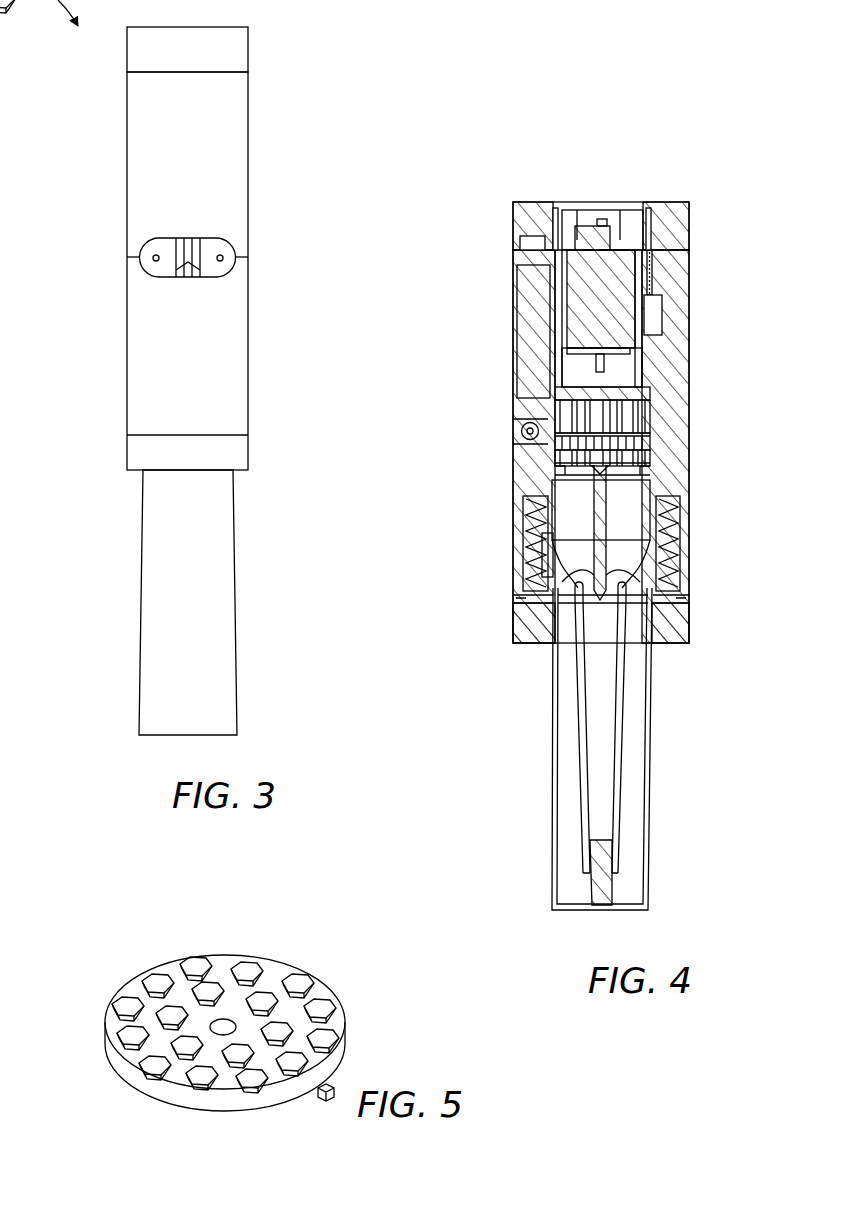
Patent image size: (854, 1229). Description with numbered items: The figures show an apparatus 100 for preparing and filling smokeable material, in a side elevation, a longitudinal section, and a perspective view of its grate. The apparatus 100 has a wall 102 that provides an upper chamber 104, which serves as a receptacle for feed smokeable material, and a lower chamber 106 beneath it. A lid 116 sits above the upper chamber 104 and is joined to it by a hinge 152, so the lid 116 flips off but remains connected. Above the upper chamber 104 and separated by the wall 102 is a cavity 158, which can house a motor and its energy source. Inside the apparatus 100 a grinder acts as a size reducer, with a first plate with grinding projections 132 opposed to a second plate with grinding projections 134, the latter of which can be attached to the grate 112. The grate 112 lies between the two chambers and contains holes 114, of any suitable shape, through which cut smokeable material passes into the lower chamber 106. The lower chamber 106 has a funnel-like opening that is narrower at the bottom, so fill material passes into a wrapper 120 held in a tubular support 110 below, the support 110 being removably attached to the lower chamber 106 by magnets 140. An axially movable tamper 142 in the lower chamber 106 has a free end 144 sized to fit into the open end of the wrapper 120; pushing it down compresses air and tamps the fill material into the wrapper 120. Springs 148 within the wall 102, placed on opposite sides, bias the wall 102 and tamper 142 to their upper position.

In FIG. 4, the apparatus 100 is at (692, 138).
In FIG. 4, the wall 102 is at (688, 445).
In FIG. 4, the upper chamber 104 is at (556, 390).
In FIG. 4, the lower chamber 106 is at (553, 556).
In FIG. 3, the support 110 is at (140, 597).
In FIG. 4, the support 110 is at (553, 748).
In FIG. 4, the grate 112 is at (620, 463).
In FIG. 5, the grate 112 is at (135, 988).
In FIG. 5, the holes 114 is at (318, 1002).
In FIG. 3, the lid 116 is at (250, 50).
In FIG. 4, the lid 116 is at (690, 223).
In FIG. 4, the wrapper 120 is at (602, 780).
In FIG. 4, the first plate with grinding projections 132 is at (560, 413).
In FIG. 4, the second plate with grinding projections 134 is at (612, 450).
In FIG. 4, the magnets 140 is at (648, 612).
In FIG. 4, the tamper 142 is at (607, 523).
In FIG. 4, the free end 144 is at (603, 592).
In FIG. 4, the springs 148 is at (530, 538).
In FIG. 3, the hinge 152 is at (200, 263).
In FIG. 4, the hinge 152 is at (520, 432).
In FIG. 4, the cavity 158 is at (618, 372).